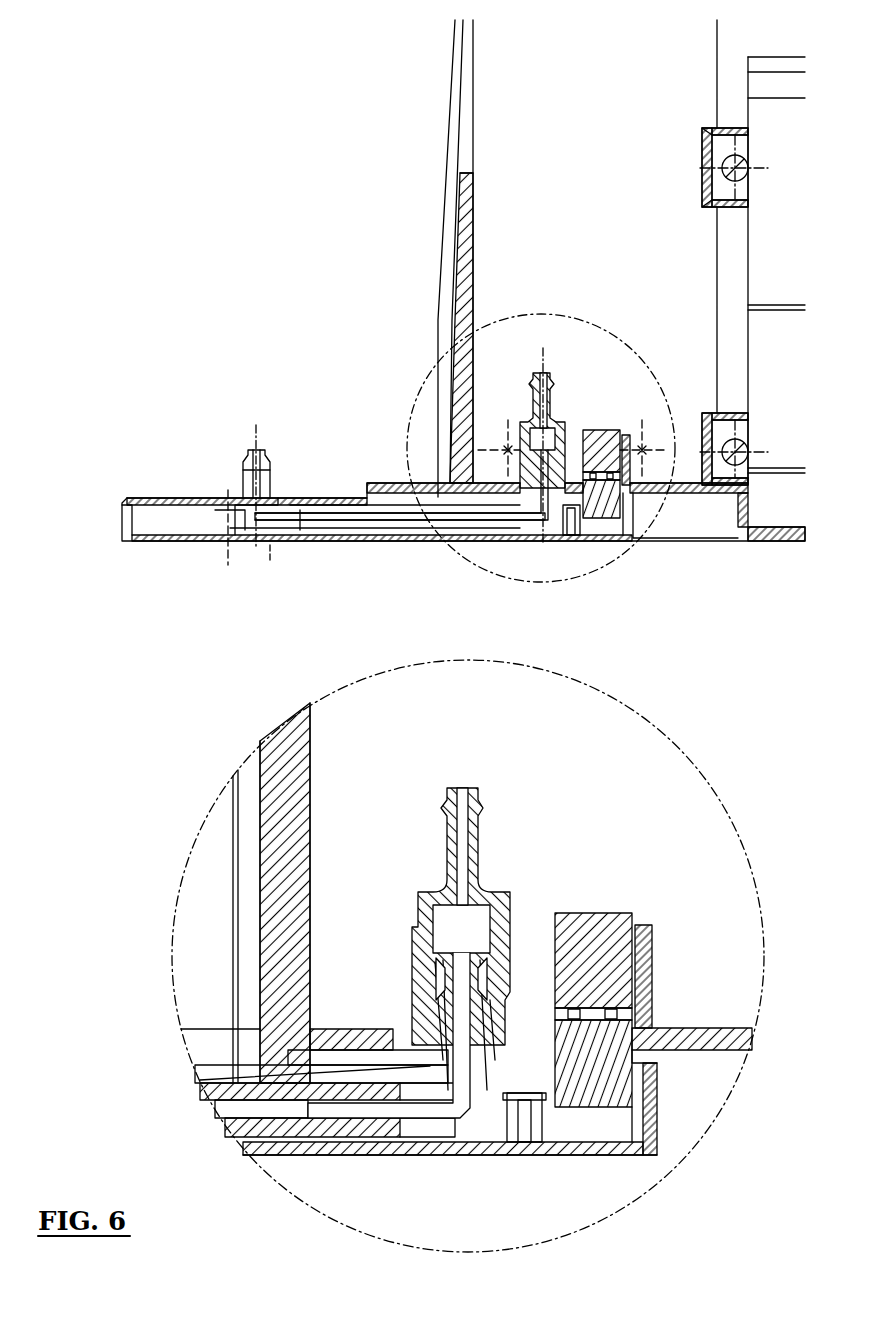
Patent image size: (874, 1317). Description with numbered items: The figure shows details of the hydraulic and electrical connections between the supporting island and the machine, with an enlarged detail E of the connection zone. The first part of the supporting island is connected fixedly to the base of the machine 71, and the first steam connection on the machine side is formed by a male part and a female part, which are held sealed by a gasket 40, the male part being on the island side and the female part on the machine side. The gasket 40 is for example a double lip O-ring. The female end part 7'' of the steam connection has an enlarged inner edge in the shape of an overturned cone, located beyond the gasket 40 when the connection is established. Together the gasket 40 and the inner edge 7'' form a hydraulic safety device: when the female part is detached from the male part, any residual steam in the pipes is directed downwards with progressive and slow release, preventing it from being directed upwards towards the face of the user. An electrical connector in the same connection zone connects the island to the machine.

The base of the machine 71 is at (418, 148).
The female end part 7'' is at (553, 1106).
The gasket 40 is at (432, 962).
The detail region E is at (633, 342).